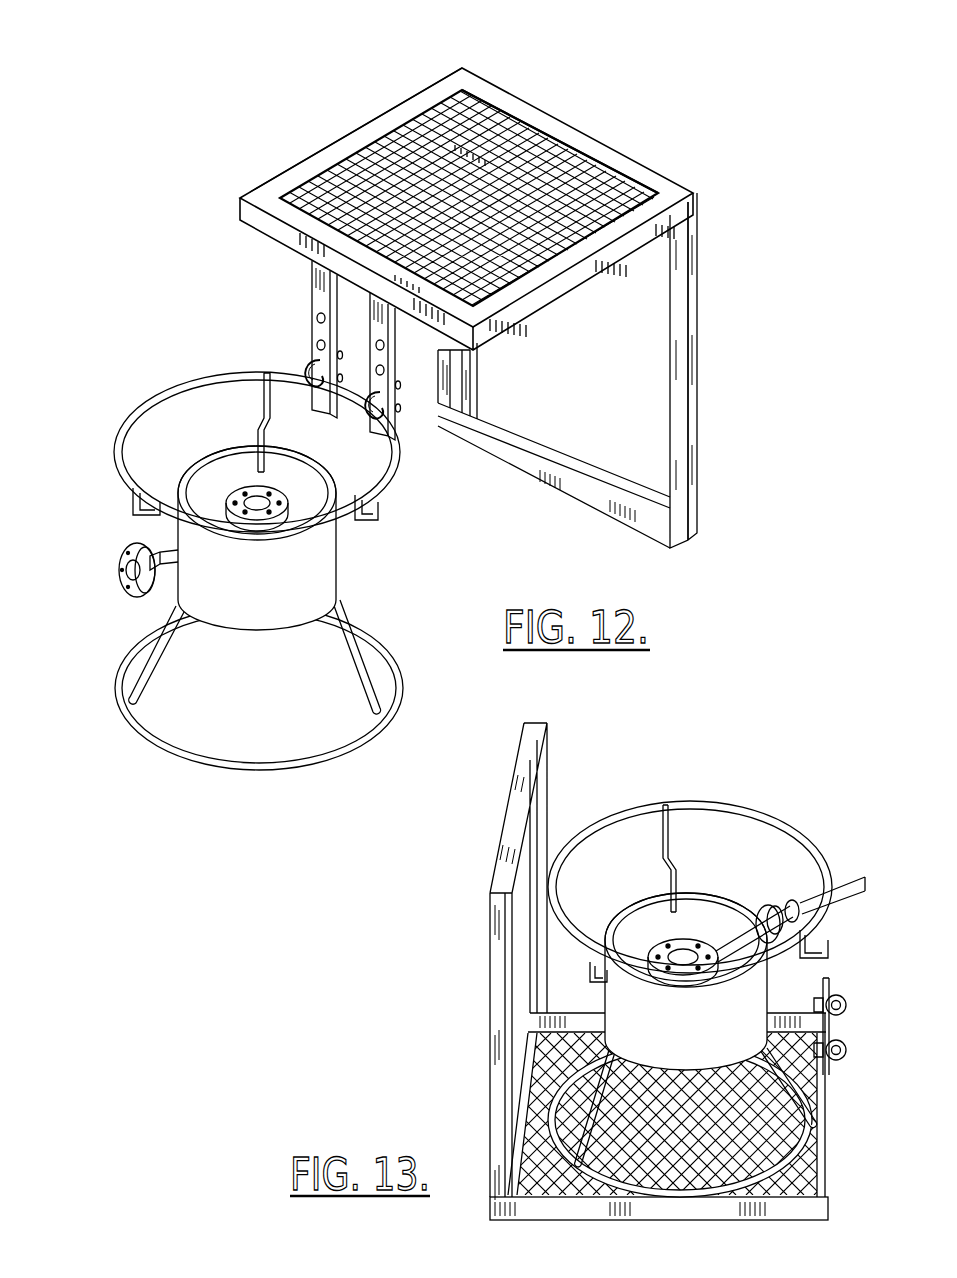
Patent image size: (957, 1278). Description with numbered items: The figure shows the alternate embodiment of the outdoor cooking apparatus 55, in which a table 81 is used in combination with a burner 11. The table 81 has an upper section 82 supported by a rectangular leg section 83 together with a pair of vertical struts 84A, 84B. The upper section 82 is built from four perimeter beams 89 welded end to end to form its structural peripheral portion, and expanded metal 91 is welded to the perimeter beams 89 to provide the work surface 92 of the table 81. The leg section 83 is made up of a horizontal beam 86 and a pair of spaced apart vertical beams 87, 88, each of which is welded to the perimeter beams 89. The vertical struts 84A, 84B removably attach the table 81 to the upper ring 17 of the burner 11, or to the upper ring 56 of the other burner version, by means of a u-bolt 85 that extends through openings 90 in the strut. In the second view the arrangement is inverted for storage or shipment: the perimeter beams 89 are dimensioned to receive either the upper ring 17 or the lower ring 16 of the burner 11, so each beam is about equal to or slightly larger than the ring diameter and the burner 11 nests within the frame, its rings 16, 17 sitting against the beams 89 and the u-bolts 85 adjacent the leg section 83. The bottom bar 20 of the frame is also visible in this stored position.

In FIG. 12, the outdoor cooking apparatus 55 is at (255, 95).
In FIG. 12, the table 81 is at (238, 207).
In FIG. 13, the table 81 is at (830, 1192).
In FIG. 12, the upper section 82 is at (382, 126).
In FIG. 12, the perimeter beams 89 is at (302, 163).
In FIG. 13, the perimeter beams 89 is at (840, 1160).
In FIG. 12, the expanded metal 91 is at (600, 178).
In FIG. 12, the work surface 92 is at (447, 92).
In FIG. 12, the rectangular leg section 83 is at (700, 470).
In FIG. 13, the rectangular leg section 83 is at (490, 985).
In FIG. 12, the vertical beam 88 is at (703, 315).
In FIG. 12, the vertical beam 87 is at (470, 382).
In FIG. 12, the horizontal beam 86 is at (582, 478).
In FIG. 13, the horizontal beam 86 is at (512, 818).
In FIG. 12, the vertical strut 84A is at (312, 292).
In FIG. 12, the vertical strut 84B is at (400, 372).
In FIG. 12, the openings 90 is at (376, 346).
In FIG. 12, the u-bolt 85 is at (305, 362).
In FIG. 13, the u-bolt 85 is at (845, 1000).
In FIG. 12, the upper ring 56 is at (190, 385).
In FIG. 12, the burner 11 is at (122, 505).
In FIG. 13, the burner 11 is at (752, 808).
In FIG. 13, the upper ring 17 is at (805, 840).
In FIG. 13, the lower ring 16 is at (808, 1112).
In FIG. 13, the bottom frame bar 20 is at (680, 1212).